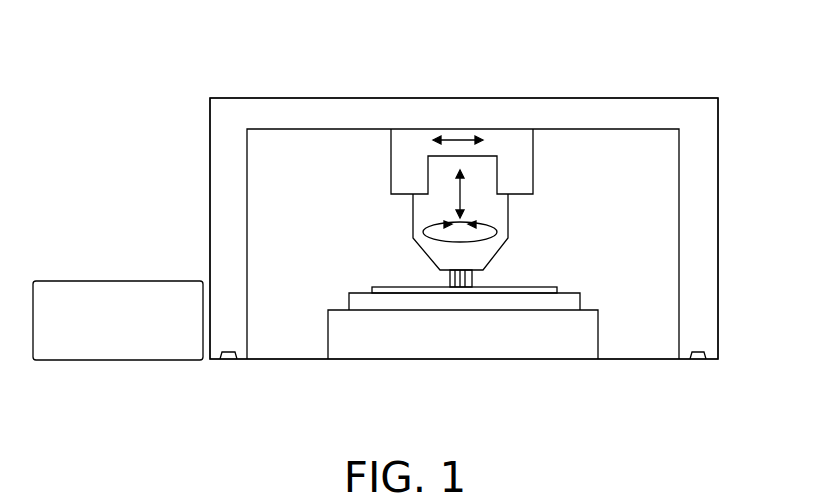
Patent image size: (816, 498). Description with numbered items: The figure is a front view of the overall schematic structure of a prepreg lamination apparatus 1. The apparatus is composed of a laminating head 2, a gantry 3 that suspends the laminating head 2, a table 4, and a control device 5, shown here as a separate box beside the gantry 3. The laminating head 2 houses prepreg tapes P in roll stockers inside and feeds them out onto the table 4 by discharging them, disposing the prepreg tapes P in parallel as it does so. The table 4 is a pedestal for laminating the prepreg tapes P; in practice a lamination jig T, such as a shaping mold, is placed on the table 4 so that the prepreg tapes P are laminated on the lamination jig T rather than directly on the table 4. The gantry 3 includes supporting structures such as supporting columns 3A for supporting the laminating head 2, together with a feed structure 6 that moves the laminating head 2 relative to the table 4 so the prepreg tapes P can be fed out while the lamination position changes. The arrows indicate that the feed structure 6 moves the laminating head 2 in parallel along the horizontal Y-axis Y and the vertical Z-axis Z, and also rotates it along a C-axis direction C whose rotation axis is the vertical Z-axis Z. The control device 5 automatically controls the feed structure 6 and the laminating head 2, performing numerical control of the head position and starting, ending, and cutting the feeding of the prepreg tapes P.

The prepreg lamination apparatus 1 is at (219, 80).
The laminating head 2 is at (440, 268).
The gantry 3 is at (722, 141).
The supporting columns 3A is at (698, 256).
The table 4 is at (598, 323).
The control device 5 is at (139, 281).
The feed structure 6 is at (533, 160).
The Y-axis Y is at (460, 138).
The Z-axis Z is at (470, 200).
The C-axis direction C is at (424, 233).
The prepreg tapes P is at (473, 286).
The lamination jig T is at (570, 292).